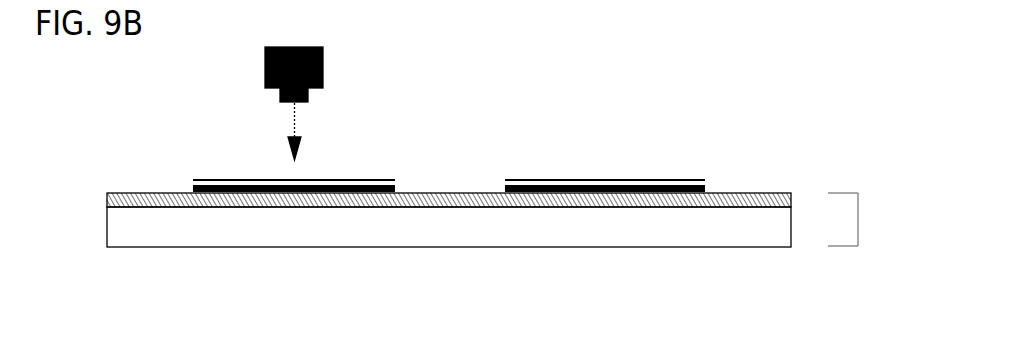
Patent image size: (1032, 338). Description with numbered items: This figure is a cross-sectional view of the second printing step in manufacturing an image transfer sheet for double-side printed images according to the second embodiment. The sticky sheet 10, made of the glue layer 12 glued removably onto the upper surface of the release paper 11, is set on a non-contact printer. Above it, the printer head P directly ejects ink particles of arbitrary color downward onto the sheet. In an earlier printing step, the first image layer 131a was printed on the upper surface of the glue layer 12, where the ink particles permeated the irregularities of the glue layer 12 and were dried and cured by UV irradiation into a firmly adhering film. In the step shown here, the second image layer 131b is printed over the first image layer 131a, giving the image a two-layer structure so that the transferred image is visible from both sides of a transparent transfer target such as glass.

The printer head P is at (265, 63).
The sticky sheet 10 is at (858, 219).
The release paper 11 is at (758, 232).
The glue layer 12 is at (759, 193).
The first image layer 131a is at (393, 188).
The second image layer 131b is at (398, 181).